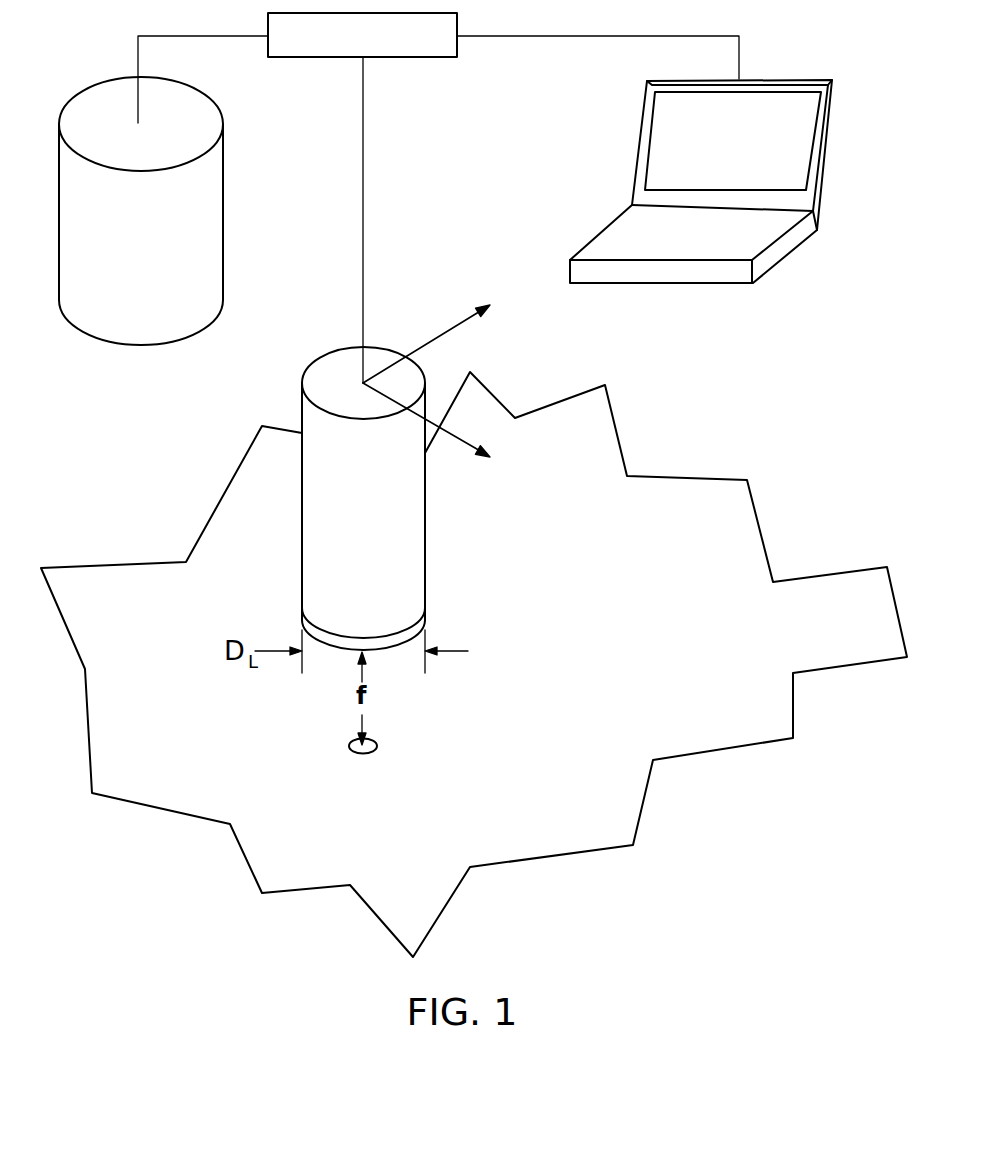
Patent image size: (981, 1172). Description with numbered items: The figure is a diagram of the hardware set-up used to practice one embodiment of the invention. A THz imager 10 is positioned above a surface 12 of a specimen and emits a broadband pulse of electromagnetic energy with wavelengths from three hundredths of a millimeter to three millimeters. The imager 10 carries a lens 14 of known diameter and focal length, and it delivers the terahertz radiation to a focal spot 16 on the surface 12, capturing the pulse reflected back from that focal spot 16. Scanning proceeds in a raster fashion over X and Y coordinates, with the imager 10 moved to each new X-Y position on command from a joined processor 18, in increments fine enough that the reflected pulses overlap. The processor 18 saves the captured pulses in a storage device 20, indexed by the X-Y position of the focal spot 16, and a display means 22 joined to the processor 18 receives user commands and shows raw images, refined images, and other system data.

The THz imager 10 is at (420, 558).
The surface 12 is at (588, 663).
The lens 14 is at (440, 608).
The focal spot 16 is at (355, 743).
The processor 18 is at (422, 58).
The storage device 20 is at (209, 262).
The display means 22 is at (633, 230).